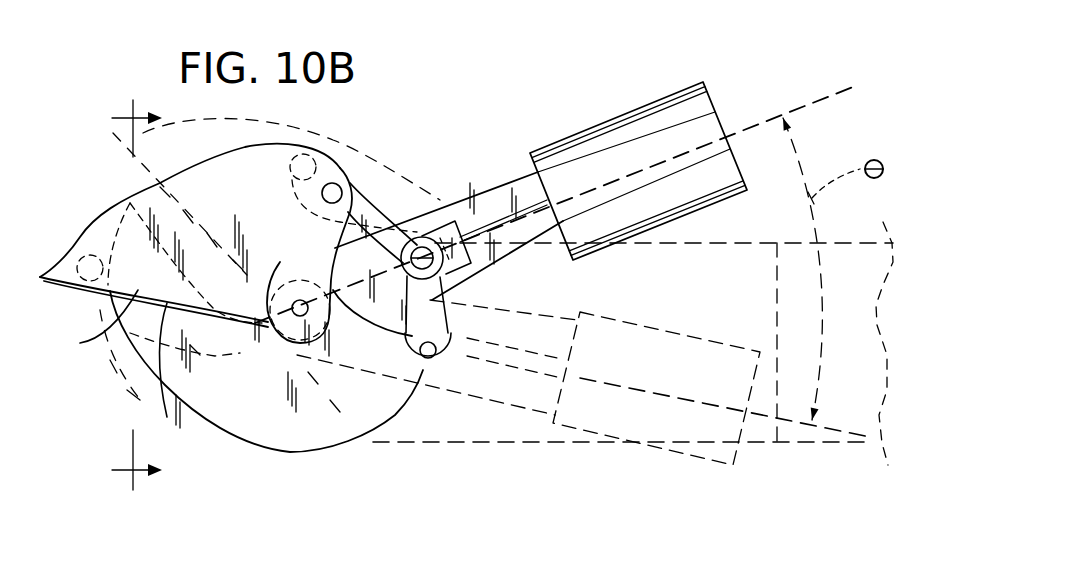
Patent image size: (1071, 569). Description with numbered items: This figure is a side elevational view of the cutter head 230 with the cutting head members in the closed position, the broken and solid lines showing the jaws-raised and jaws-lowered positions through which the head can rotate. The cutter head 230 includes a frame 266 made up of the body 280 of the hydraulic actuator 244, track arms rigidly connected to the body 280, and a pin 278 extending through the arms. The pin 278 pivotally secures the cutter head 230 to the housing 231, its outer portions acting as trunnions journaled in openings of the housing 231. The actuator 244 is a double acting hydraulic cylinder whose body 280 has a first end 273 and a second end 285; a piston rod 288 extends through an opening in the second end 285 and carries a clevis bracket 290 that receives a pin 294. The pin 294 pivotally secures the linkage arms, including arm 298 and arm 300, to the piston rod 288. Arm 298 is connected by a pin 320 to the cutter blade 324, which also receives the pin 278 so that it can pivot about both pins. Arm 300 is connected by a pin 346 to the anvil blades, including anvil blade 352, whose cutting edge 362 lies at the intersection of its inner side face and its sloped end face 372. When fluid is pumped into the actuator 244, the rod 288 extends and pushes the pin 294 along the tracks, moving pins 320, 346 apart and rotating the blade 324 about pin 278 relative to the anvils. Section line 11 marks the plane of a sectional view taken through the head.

The section line 11- 11 is at (170, 298).
The cutter head 230 is at (259, 464).
The housing 231 is at (417, 443).
The hydraulic actuator 244 is at (651, 94).
The frame 266 is at (487, 197).
The first end 273 is at (718, 110).
The pin 278 is at (294, 302).
The body 280 is at (580, 147).
The second end 285 is at (530, 160).
The piston rod 288 is at (523, 232).
The clevis bracket 290 is at (452, 221).
The pin 294 is at (432, 294).
The linkage arm 298 is at (443, 313).
The linkage arm 300 is at (377, 213).
The pin 320 is at (426, 354).
The cutter blade 324 is at (279, 408).
The pin 346 is at (332, 183).
The anvil blade 352 is at (244, 208).
The cutting edge 362 is at (170, 376).
The end face 372 is at (86, 343).